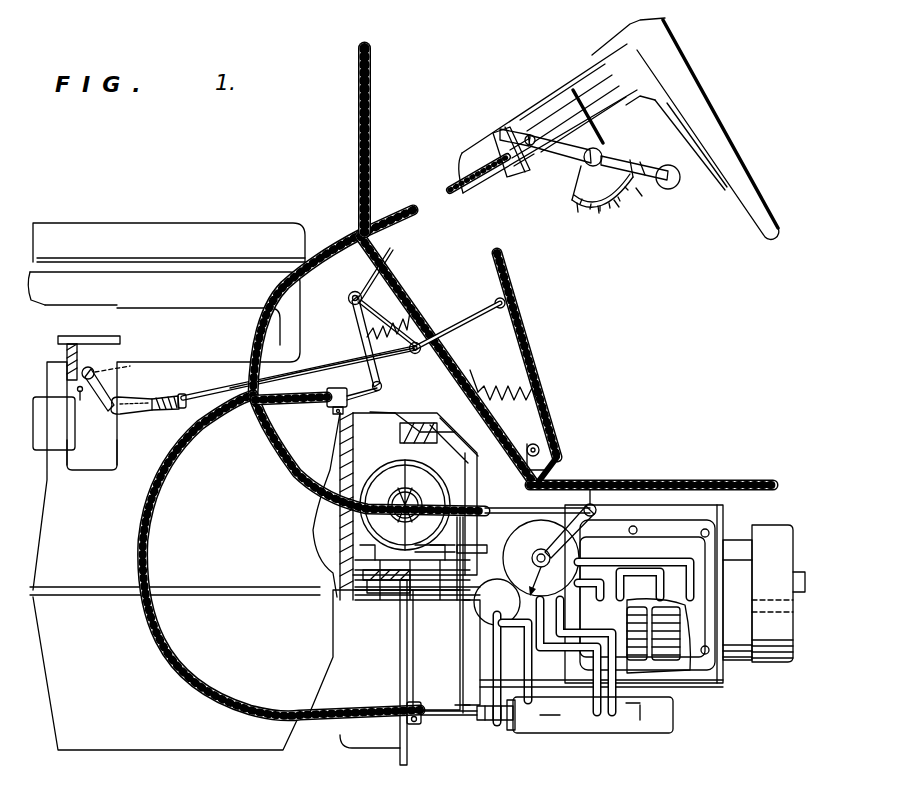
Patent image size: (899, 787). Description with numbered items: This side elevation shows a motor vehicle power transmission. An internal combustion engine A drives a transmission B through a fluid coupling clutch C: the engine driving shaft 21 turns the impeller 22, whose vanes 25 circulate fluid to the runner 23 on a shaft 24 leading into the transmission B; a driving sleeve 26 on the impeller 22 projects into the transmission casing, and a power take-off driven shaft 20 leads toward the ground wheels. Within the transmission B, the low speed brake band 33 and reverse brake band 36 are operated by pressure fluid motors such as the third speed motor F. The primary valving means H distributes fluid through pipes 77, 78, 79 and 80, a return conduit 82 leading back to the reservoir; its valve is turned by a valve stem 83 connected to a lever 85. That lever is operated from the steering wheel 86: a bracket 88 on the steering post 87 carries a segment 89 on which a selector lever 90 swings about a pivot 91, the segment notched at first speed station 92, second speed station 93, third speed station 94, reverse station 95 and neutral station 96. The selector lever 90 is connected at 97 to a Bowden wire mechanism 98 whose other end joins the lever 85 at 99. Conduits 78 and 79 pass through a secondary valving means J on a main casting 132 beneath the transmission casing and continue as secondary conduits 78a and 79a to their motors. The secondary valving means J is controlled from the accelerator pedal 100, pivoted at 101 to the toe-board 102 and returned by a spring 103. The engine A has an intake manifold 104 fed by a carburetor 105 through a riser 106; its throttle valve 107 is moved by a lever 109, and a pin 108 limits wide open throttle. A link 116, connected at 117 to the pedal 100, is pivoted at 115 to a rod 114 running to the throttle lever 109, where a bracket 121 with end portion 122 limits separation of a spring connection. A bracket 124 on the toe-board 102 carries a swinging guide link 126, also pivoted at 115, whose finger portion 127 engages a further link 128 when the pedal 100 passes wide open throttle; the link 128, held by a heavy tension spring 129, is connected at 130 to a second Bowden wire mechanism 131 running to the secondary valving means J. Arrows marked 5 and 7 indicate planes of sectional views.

The internal combustion engine A is at (98, 228).
The intake manifold 104 is at (152, 280).
The carburetor 105 is at (85, 470).
The riser 106 is at (122, 346).
The throttle valve 107 is at (112, 380).
The pin 108 is at (58, 419).
The lever 109 is at (118, 394).
The bracket 121 is at (162, 410).
The Bowden wire mechanism 98 is at (413, 207).
The connection of Bowden wire to lever 99 is at (612, 486).
The bracket 88 is at (558, 96).
The steering post 87 is at (602, 78).
The steering wheel 86 is at (740, 143).
The connection of selector lever to Bowden wire 97 is at (527, 140).
The segment 89 is at (572, 184).
The pivot 91 is at (616, 140).
The third speed station 94 is at (645, 166).
The selector lever 90 is at (681, 185).
The second speed station 93 is at (640, 196).
The first speed station 92 is at (618, 207).
The neutral station 96 is at (599, 212).
The reverse station 95 is at (578, 212).
The accelerator pedal 100 is at (512, 262).
The pedal pivot 101 is at (538, 445).
The toe-board 102 is at (470, 368).
The spring 103 is at (500, 402).
The link 116 is at (494, 312).
The pivotal connection 117 is at (492, 318).
The finger portion 127 is at (417, 355).
The pivot 115 is at (440, 372).
The link 128 is at (370, 350).
The rod 114 is at (322, 362).
The end portion of bracket 122 is at (350, 300).
The bracket 124 is at (380, 283).
The swinging guide link 126 is at (418, 290).
The tension coiled spring 129 is at (428, 312).
The second Bowden wire mechanism 131 is at (358, 394).
The connection of link to second Bowden wire 130 is at (392, 418).
The clutch C is at (420, 453).
The driving shaft 21 is at (330, 575).
The impeller 22 is at (462, 474).
The vanes 25 is at (430, 446).
The runner 23 is at (362, 482).
The shaft 24 is at (410, 602).
The section line 5 is at (433, 598).
The driving sleeve 26 is at (463, 578).
The pressure fluid motor F is at (472, 652).
The secondary conduit 79a is at (495, 640).
The lever 85 is at (575, 490).
The primary distributer valving means H is at (506, 557).
The valve stem 83 is at (512, 540).
The primary conduit 79 is at (540, 567).
The transmission B is at (628, 511).
The pipe 80 is at (650, 560).
The pipe 77 is at (620, 588).
The primary conduit 78 is at (572, 578).
The secondary conduit 78a is at (596, 652).
The return conduit 82 is at (580, 622).
The reverse speed ratio controlling device 36 is at (682, 668).
The first speed ratio controlling device 33 is at (655, 675).
The power take-off driven shaft 20 is at (795, 590).
The secondary valving means J is at (556, 730).
The main casting 132 is at (570, 740).
The section line 7 is at (462, 708).